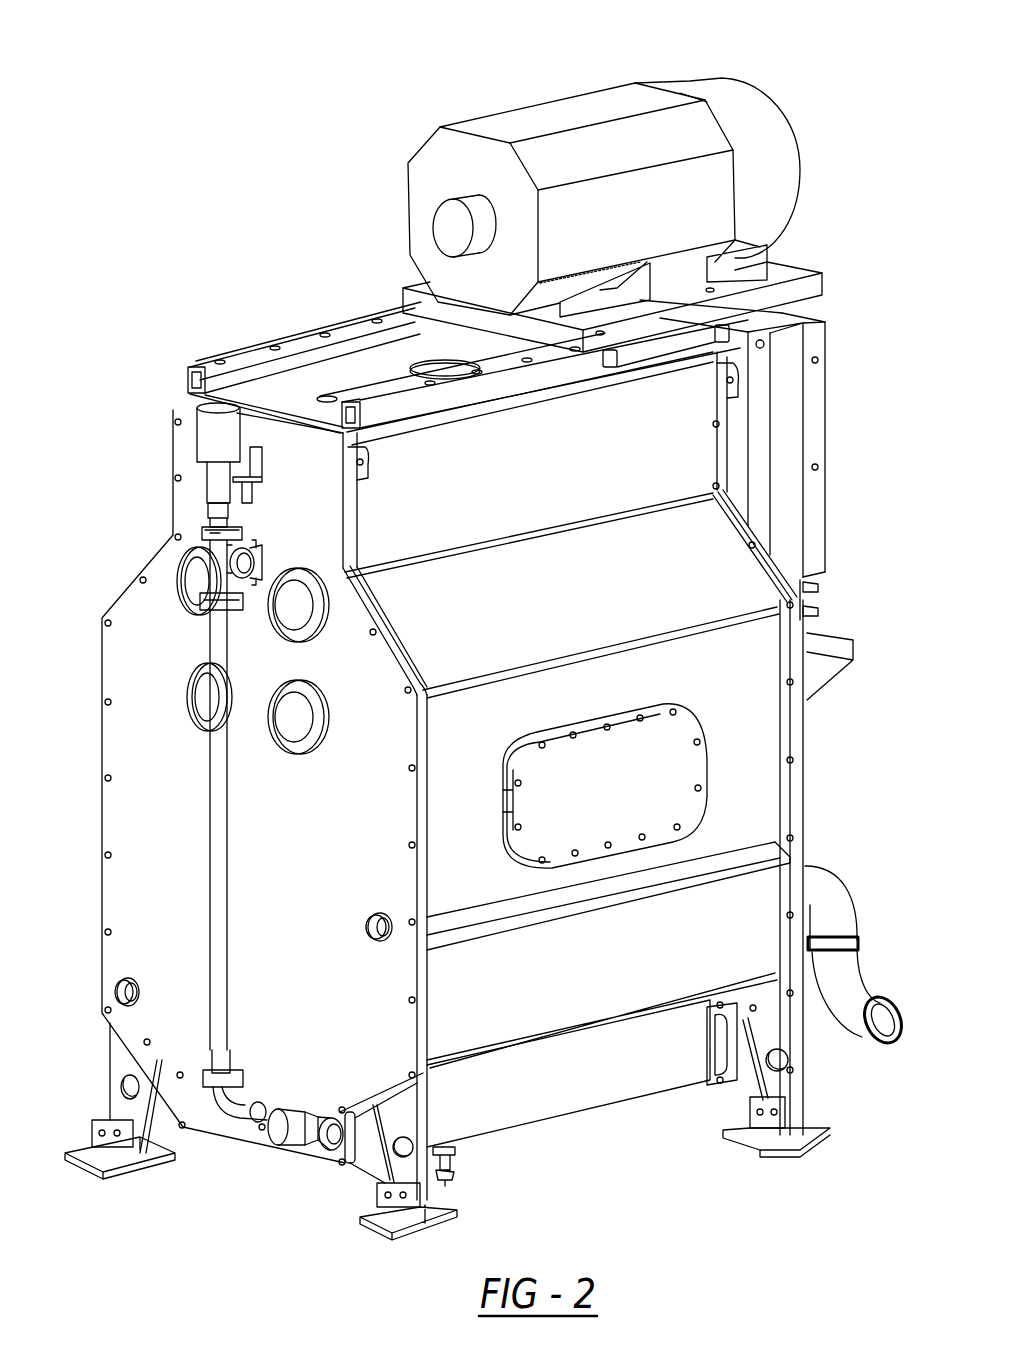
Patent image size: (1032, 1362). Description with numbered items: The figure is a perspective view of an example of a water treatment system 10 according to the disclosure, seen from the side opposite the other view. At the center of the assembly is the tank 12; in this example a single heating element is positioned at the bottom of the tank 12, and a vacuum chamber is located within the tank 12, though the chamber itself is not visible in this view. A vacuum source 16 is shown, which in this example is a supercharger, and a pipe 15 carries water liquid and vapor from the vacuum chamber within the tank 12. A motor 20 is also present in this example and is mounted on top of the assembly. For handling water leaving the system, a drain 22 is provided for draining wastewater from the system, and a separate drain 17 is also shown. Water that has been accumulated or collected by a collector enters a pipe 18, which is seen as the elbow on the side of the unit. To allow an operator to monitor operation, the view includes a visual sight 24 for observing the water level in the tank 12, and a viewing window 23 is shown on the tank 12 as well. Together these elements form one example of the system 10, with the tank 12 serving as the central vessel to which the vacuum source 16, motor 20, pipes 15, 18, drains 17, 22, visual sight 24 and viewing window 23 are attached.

The system 10 is at (188, 215).
The tank 12 is at (755, 735).
The pipe 15 is at (810, 597).
The vacuum source 16 is at (825, 403).
The drain 17 is at (318, 1147).
The pipe 18 is at (853, 903).
The motor 20 is at (578, 98).
The drain 22 is at (447, 1152).
The viewing window 23 is at (180, 713).
The visual sight 24 is at (205, 500).